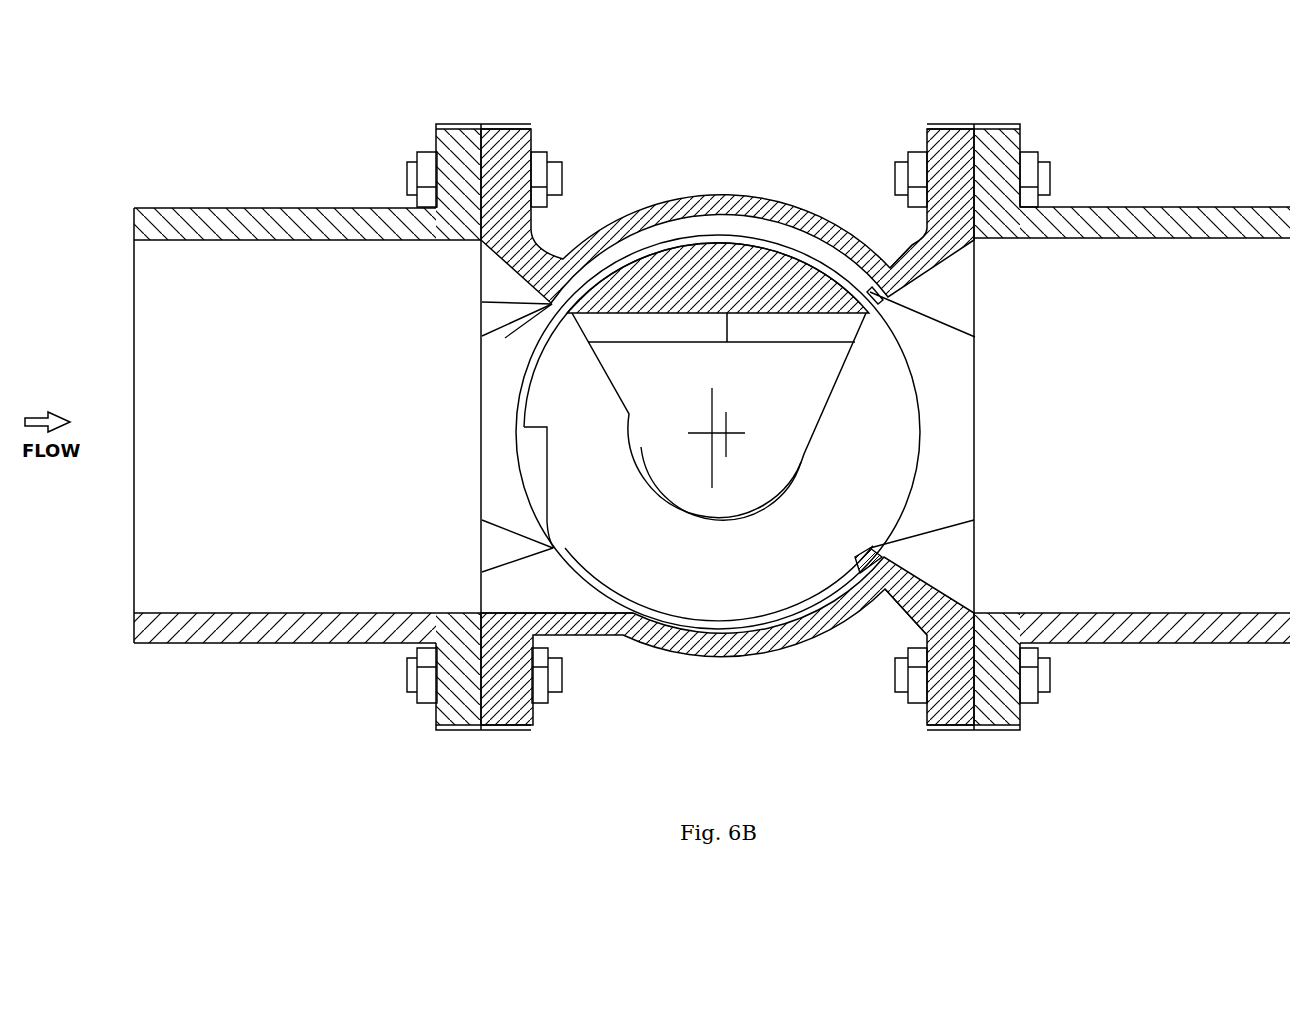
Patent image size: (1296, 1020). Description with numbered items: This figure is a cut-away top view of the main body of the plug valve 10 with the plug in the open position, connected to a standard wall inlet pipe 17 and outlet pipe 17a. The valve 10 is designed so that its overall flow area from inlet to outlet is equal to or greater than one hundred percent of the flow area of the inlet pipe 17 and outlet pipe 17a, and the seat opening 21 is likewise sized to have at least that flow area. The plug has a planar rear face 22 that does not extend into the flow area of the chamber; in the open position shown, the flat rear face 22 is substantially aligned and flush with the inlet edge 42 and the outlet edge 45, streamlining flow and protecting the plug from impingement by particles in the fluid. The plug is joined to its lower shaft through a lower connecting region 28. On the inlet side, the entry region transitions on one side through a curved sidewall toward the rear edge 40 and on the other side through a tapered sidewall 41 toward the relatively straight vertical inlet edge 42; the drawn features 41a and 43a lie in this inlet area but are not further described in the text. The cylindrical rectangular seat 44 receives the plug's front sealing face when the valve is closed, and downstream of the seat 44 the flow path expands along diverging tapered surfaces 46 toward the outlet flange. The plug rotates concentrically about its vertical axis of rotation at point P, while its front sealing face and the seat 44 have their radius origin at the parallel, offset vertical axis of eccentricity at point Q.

The plug valve 10 is at (736, 193).
The inlet pipe 17 is at (243, 207).
The outlet pipe 17a is at (1158, 207).
The seat opening 21 is at (898, 410).
The rear face 22 is at (690, 313).
The lower connecting region 28 is at (796, 427).
The rear edge 40 is at (632, 614).
The tapered sidewall 41 is at (482, 303).
The upstream lower seat ring portion 41a is at (500, 541).
The inlet edge 42 is at (505, 338).
The lower seat support 43a is at (532, 593).
The seat 44 is at (858, 556).
The outlet edge 45 is at (884, 300).
The diverging tapered surfaces 46 is at (900, 258).
The vertical axis of rotation P is at (711, 436).
The vertical axis of eccentricity Q is at (727, 436).